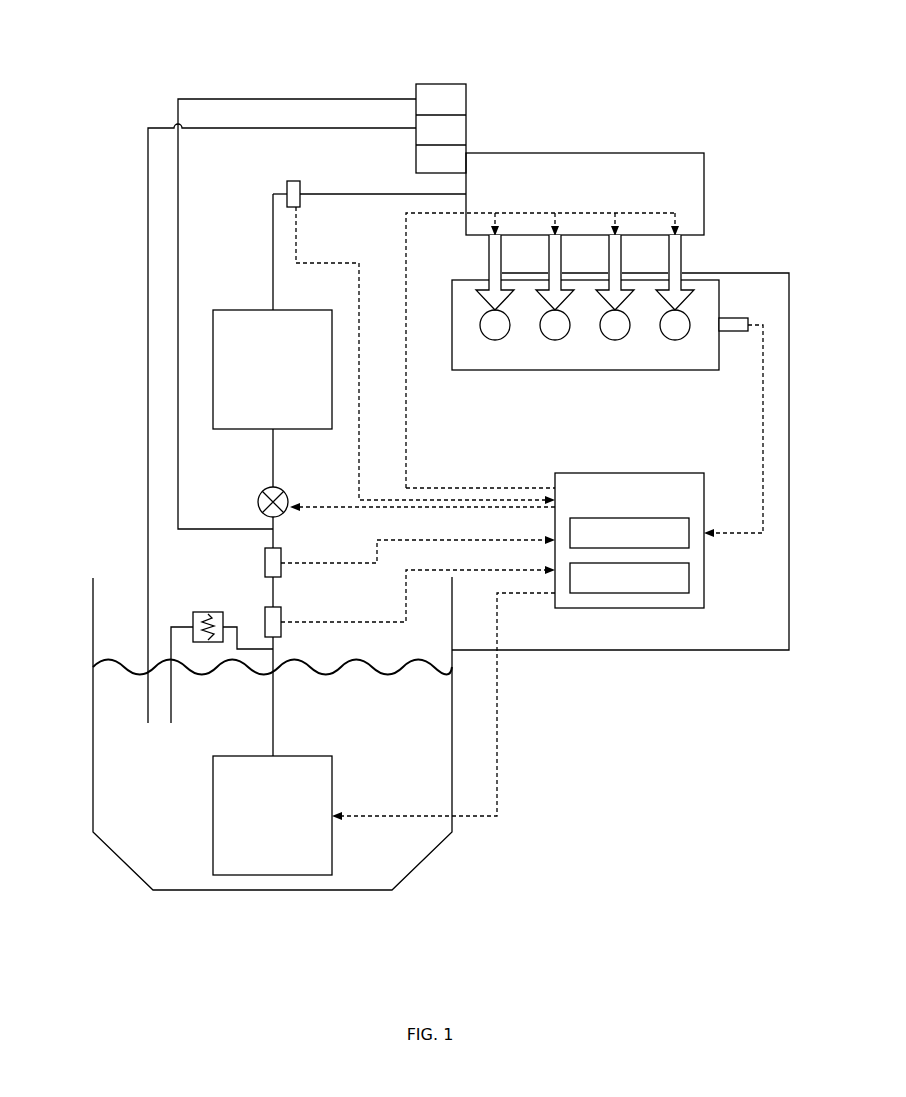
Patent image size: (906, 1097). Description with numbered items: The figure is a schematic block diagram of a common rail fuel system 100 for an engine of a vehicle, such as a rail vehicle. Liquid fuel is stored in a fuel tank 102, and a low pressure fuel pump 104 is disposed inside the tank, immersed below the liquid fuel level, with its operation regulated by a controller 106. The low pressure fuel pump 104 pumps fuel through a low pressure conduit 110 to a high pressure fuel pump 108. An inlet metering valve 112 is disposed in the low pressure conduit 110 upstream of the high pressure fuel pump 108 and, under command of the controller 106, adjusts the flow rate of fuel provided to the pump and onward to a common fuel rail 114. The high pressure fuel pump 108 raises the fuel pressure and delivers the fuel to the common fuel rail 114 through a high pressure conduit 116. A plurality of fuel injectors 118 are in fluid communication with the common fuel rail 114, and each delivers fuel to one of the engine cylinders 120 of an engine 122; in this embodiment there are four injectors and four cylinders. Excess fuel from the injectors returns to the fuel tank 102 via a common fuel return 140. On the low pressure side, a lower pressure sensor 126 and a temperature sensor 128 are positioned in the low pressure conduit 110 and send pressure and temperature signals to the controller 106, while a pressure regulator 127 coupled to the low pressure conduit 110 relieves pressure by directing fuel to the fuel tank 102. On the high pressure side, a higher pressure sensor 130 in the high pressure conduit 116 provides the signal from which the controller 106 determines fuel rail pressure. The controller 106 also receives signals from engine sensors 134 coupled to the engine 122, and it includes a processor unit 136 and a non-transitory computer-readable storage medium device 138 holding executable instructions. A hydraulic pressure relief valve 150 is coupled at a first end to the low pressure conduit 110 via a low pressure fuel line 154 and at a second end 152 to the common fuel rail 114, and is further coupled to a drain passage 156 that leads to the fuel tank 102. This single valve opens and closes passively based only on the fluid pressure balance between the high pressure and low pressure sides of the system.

The common rail fuel system 100 is at (124, 20).
The fuel tank 102 is at (93, 620).
The low pressure fuel pump 104 is at (272, 815).
The controller 106 is at (497, 646).
The high pressure fuel pump 108 is at (272, 369).
The low pressure conduit 110 is at (273, 724).
The inlet metering valve 112 is at (258, 500).
The common fuel rail 114 is at (555, 320).
The high pressure conduit 116 is at (415, 194).
The fuel injectors 118 is at (669, 268).
The engine cylinders 120 is at (495, 340).
The engine 122 is at (590, 371).
The lower pressure sensor 126 is at (282, 615).
The pressure regulator 127 is at (204, 612).
The temperature sensor 128 is at (282, 555).
The higher pressure sensor 130 is at (289, 181).
The engine sensors 134 is at (725, 318).
The processor unit 136 is at (629, 533).
The non-transitory computer-readable storage medium device 138 is at (629, 578).
The common fuel return 140 is at (705, 651).
The hydraulic pressure relief valve 150 is at (446, 84).
The second end 152 is at (492, 144).
The low pressure fuel line 154 is at (336, 99).
The drain passage 156 is at (148, 233).